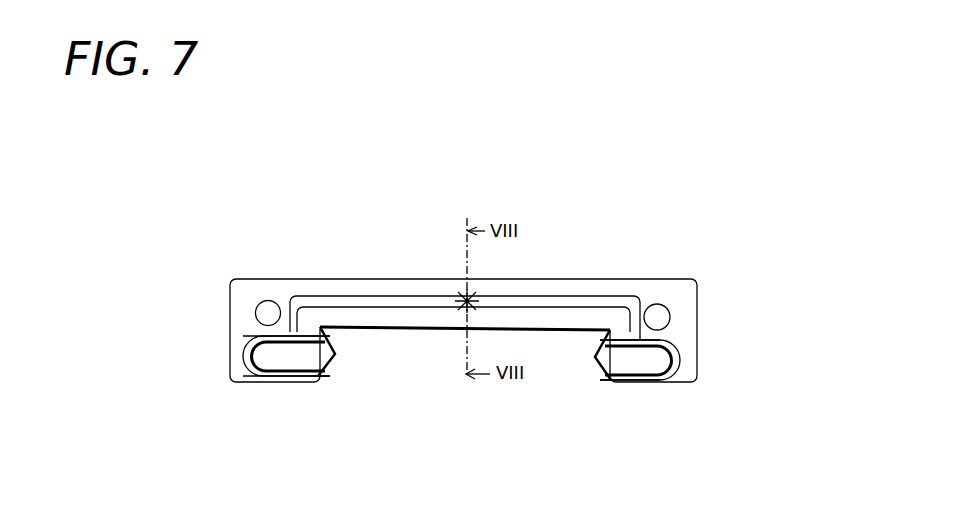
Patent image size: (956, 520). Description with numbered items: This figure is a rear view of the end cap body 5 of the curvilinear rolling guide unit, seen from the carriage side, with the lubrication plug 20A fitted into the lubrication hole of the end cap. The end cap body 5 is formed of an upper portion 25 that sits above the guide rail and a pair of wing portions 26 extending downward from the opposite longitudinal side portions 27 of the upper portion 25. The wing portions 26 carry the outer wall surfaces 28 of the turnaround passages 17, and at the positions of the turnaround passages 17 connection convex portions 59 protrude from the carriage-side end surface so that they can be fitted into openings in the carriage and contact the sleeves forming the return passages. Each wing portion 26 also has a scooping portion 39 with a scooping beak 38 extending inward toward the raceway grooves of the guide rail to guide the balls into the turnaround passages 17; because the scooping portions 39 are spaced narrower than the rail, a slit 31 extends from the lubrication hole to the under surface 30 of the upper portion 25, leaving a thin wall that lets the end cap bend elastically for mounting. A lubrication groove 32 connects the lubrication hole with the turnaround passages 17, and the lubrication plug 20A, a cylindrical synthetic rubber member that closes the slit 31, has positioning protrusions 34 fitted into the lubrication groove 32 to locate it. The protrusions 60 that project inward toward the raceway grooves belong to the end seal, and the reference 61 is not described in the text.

The end cap body 5 is at (672, 258).
The upper portion 25 is at (397, 279).
The wing portions 26 is at (237, 362).
The longitudinal side portions 27 is at (243, 284).
The lubrication groove 32 is at (349, 300).
The through hole 61 is at (268, 301).
The connection convex portions 59 is at (243, 347).
The outer wall surfaces 28 is at (528, 425).
The turnaround passages 17 is at (285, 360).
The under surface 30 is at (391, 332).
The slit 31 is at (462, 314).
The positioning protrusions 34 is at (462, 302).
The scooping beaks 38 is at (336, 352).
The scooping portions 39 is at (327, 362).
The protrusions 60 is at (465, 300).
The lubrication plug 20A is at (470, 302).